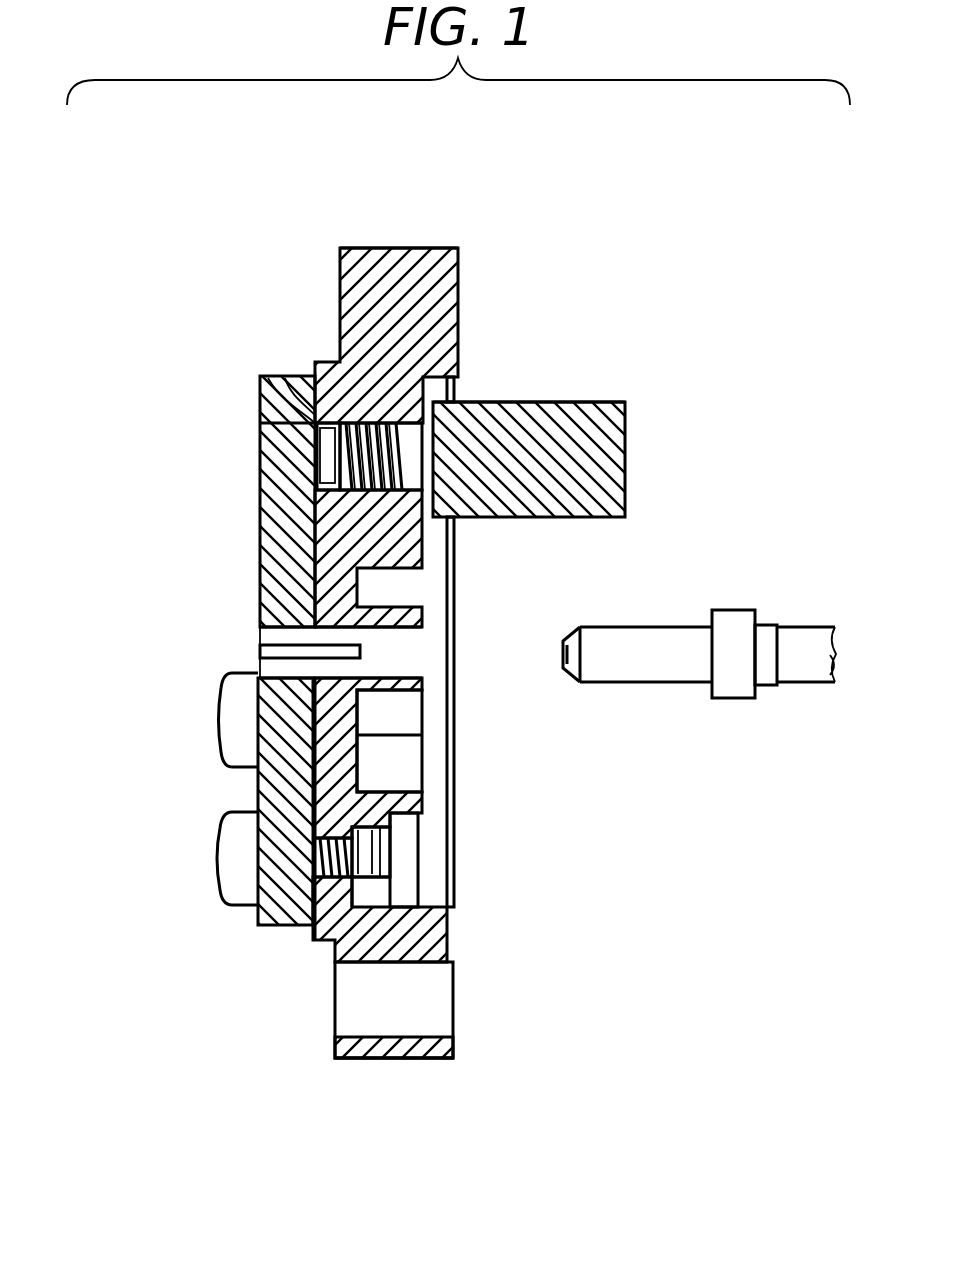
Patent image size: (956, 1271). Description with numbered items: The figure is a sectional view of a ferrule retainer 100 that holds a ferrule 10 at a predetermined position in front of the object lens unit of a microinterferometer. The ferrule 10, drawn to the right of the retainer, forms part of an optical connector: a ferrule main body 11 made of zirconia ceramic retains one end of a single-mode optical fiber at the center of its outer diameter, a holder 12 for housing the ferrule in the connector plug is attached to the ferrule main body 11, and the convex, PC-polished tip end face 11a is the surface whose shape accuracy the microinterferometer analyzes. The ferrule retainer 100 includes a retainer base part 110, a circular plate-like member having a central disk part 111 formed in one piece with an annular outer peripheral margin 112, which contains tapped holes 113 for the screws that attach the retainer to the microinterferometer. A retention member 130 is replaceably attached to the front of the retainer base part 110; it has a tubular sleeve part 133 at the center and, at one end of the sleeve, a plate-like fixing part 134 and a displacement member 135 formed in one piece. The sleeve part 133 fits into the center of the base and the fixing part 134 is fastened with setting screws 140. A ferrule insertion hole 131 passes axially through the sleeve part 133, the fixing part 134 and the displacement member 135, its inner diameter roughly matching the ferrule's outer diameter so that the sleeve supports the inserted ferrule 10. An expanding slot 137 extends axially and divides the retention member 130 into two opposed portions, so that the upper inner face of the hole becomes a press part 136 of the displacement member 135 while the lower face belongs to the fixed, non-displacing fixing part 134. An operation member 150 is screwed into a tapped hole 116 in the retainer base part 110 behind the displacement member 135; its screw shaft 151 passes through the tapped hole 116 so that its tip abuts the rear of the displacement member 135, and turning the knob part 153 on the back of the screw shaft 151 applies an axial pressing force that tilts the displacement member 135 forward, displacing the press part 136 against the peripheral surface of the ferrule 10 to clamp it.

The ferrule 10 is at (655, 692).
The ferrule main body 11 is at (680, 627).
The tip end face 11a is at (562, 648).
The holder 12 is at (740, 700).
The ferrule retainer 100 is at (268, 280).
The retainer base part 110 is at (476, 262).
The disk part 111 is at (403, 758).
The outer peripheral margin 112 is at (373, 247).
The tapped hole 113 is at (437, 1000).
The tapped hole 116 is at (292, 385).
The retention member 130 is at (264, 940).
The ferrule insertion hole 131 is at (403, 660).
The sleeve part 133 is at (414, 638).
The fixing part 134 is at (272, 780).
The displacement member 135 is at (262, 515).
The press part 136 is at (262, 628).
The expanding slot 137 is at (262, 650).
The setting screw 140 is at (218, 860).
The operation member 150 is at (642, 410).
The screw shaft 151 is at (266, 425).
The knob part 153 is at (528, 401).